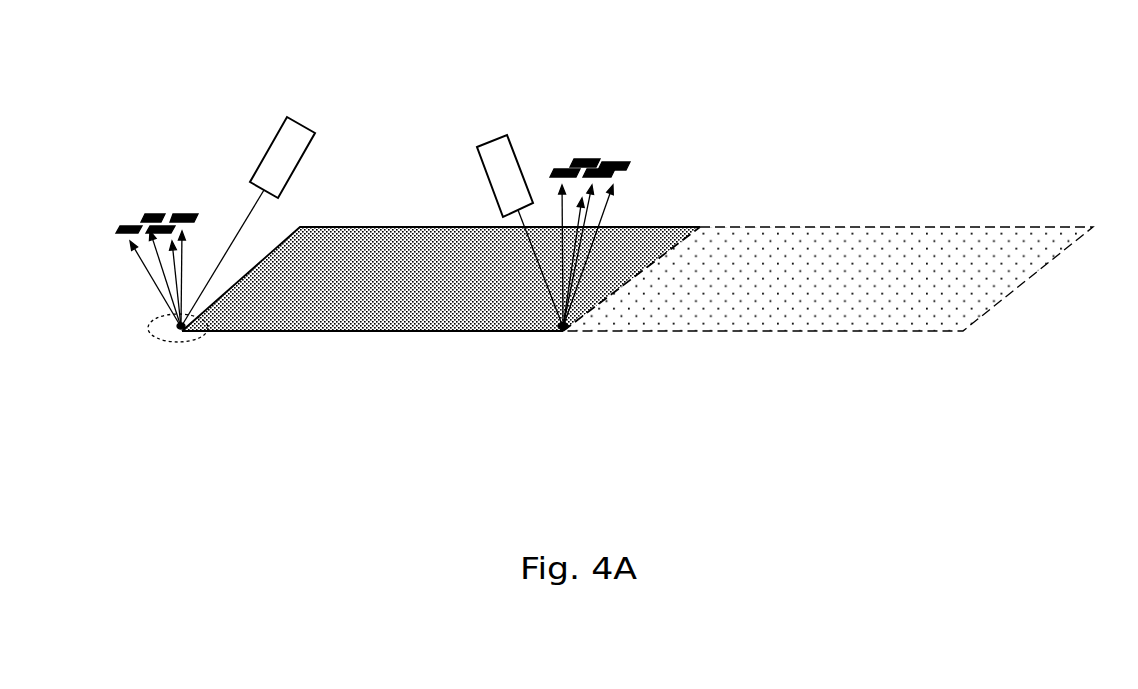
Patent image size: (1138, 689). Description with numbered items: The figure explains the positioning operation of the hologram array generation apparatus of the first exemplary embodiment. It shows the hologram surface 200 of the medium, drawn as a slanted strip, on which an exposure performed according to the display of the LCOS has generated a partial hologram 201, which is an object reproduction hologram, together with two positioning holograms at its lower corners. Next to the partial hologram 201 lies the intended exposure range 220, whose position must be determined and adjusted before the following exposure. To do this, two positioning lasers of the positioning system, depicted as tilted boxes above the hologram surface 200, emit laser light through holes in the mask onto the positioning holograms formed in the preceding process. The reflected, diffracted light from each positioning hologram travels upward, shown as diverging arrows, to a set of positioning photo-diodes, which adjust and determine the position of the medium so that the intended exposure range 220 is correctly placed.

The hologram surface 200 is at (419, 105).
The partial hologram 201 is at (340, 248).
The intended exposure range 220 is at (864, 200).